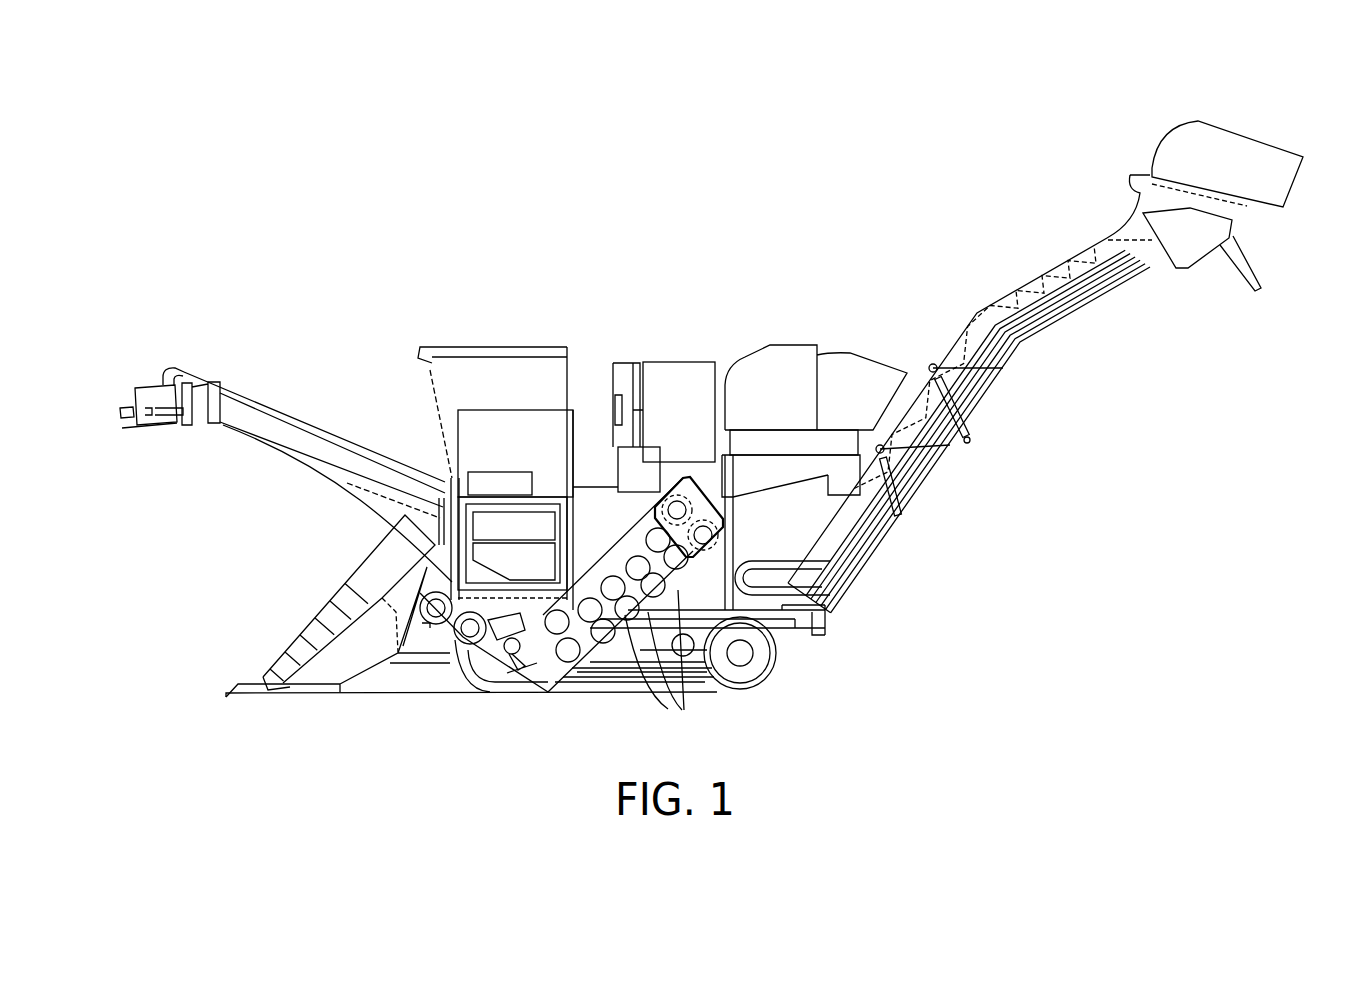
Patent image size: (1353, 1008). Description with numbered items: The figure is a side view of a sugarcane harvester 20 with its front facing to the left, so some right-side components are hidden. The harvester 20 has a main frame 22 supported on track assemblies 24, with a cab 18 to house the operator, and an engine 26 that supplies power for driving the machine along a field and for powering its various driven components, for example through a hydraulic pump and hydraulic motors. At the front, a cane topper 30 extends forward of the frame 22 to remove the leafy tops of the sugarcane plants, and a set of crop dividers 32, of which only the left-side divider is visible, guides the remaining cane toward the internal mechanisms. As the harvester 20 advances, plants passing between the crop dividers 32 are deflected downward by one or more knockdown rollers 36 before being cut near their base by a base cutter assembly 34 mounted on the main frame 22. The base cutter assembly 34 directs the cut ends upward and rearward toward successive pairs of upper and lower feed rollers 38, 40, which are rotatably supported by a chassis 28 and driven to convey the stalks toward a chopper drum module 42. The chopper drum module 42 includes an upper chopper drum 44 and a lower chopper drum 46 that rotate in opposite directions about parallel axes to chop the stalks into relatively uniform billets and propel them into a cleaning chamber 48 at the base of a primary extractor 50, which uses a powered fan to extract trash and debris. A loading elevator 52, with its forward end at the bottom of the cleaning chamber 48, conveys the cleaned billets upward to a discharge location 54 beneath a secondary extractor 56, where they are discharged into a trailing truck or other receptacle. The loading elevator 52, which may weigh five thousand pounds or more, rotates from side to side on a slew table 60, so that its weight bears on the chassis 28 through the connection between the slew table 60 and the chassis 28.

The cab 18 is at (513, 357).
The harvester 20 is at (271, 289).
The main frame 22 is at (381, 670).
The track assemblies 24 is at (588, 708).
The engine 26 is at (518, 570).
The chassis 28 is at (702, 570).
The cane topper 30 is at (187, 427).
The crop dividers 32 is at (320, 617).
The base cutter assembly 34 is at (541, 649).
The knockdown rollers 36 is at (452, 650).
The upper feed rollers 38 is at (647, 536).
The lower feed rollers 40 is at (673, 660).
The chopper drum module 42 is at (697, 462).
The upper chopper drum 44 is at (657, 503).
The lower chopper drum 46 is at (733, 528).
The cleaning chamber 48 is at (811, 488).
The primary extractor 50 is at (847, 353).
The loading elevator 52 is at (1007, 393).
The discharge location 54 is at (1256, 234).
The secondary extractor 56 is at (1177, 153).
The slew table 60 is at (850, 614).